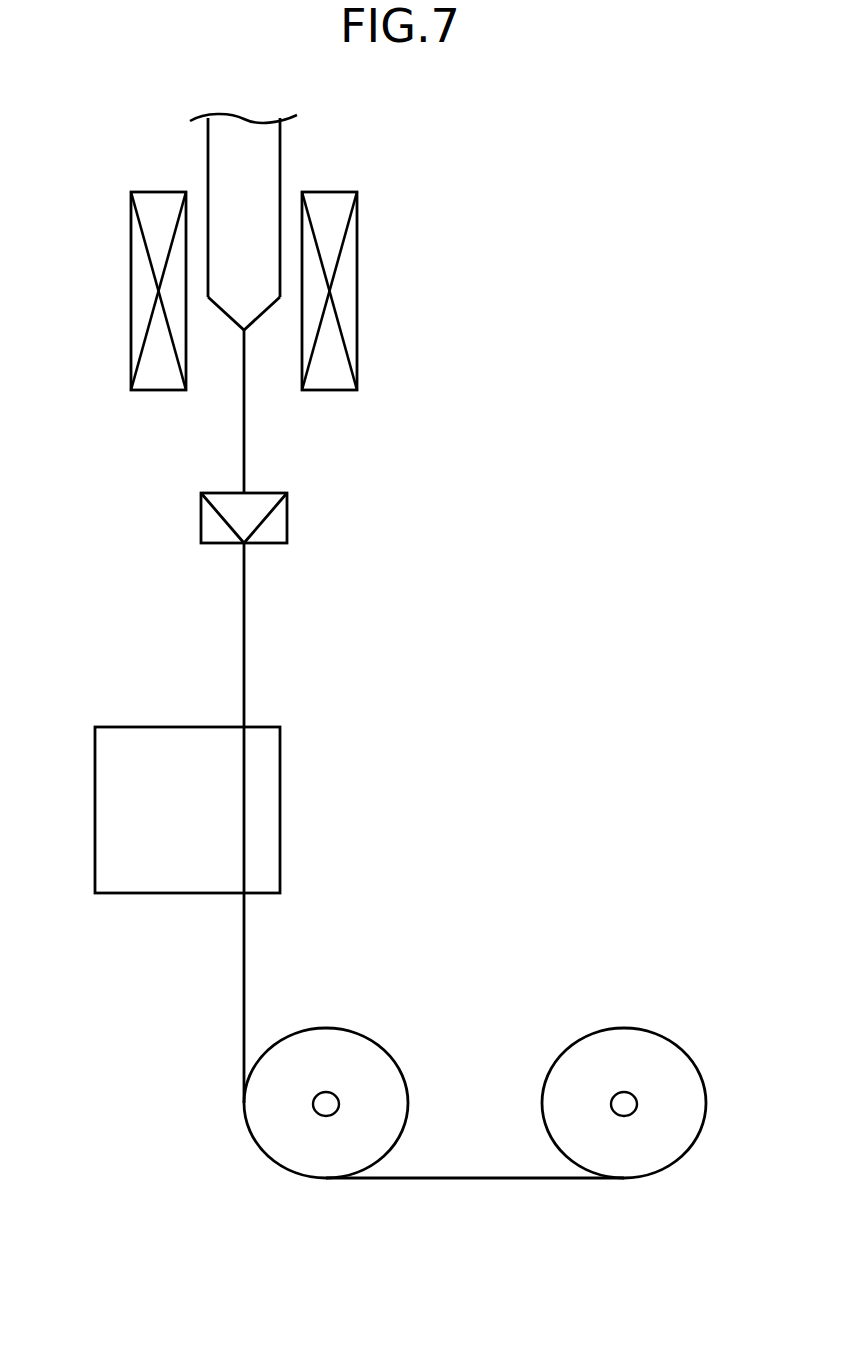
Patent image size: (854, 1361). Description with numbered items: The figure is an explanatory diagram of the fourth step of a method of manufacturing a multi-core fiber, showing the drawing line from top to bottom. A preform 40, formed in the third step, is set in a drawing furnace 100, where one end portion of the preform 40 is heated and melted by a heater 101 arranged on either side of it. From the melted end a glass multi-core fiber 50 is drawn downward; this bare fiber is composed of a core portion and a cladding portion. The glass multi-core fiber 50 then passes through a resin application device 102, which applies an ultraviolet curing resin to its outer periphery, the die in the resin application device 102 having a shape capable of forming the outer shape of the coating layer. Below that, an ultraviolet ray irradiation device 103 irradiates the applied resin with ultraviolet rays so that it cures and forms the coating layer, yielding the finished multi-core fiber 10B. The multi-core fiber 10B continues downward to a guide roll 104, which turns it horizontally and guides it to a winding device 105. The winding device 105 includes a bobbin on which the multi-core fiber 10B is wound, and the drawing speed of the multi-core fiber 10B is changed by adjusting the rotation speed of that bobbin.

The drawing furnace 100 is at (75, 104).
The preform 40 is at (272, 160).
The heater 101 is at (358, 215).
The glass multi-core fiber 50 is at (245, 448).
The resin application device 102 is at (280, 522).
The ultraviolet ray irradiation device 103 is at (268, 752).
The multi-core fiber 10B is at (245, 968).
The guide roll 104 is at (370, 1053).
The winding device 105 is at (668, 1053).